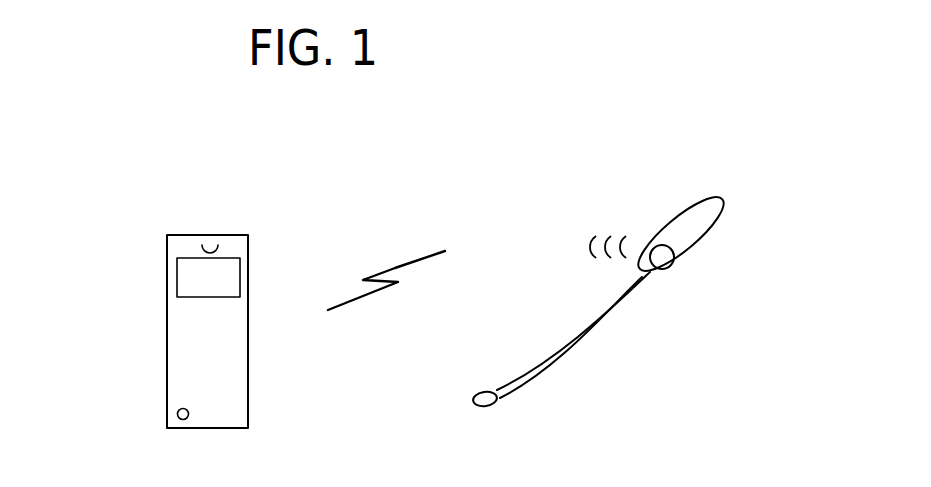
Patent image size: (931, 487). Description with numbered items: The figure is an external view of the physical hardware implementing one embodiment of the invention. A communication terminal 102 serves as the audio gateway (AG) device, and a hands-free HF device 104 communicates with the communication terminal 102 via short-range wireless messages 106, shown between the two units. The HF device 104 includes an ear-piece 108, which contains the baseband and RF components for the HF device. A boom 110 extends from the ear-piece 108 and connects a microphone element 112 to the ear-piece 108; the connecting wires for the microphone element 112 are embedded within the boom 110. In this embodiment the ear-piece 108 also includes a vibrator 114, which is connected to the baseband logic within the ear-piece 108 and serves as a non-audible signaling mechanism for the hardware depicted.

The communication terminal 102 is at (172, 318).
The HF device 104 is at (628, 245).
The short-range wireless messages 106 is at (395, 267).
The ear-piece 108 is at (723, 223).
The boom 110 is at (610, 310).
The microphone element 112 is at (475, 398).
The vibrator 114 is at (672, 265).